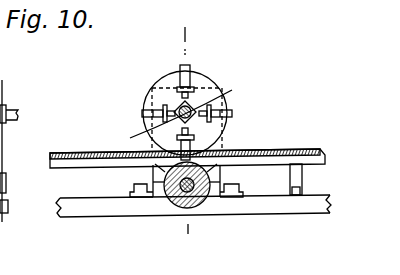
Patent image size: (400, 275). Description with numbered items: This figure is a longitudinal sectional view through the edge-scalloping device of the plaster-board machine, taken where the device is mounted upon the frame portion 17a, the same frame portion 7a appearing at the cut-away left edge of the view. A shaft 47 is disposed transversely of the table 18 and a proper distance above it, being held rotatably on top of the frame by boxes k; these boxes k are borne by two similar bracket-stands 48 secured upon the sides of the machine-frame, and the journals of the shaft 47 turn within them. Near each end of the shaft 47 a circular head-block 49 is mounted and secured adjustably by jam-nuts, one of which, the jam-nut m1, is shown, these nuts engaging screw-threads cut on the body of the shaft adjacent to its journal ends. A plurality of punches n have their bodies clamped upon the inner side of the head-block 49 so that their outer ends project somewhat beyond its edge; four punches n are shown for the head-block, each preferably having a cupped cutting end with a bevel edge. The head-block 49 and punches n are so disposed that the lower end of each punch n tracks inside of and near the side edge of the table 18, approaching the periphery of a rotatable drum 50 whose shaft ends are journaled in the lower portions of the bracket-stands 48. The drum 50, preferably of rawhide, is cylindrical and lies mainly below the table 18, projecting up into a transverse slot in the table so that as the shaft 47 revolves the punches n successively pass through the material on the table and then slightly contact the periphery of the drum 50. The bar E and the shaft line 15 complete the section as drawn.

The shaft 15 is at (195, 137).
The frame portion 17a is at (313, 206).
The table 18 is at (128, 163).
The shaft 47 is at (190, 111).
The bracket-stands 48 is at (212, 180).
The head-block 49 is at (167, 80).
The rotatable drum 50 is at (178, 208).
The bed bar E is at (307, 150).
The punches n is at (191, 70).
The jam-nut m1 is at (120, 135).
The boxes k is at (6, 103).
The frame portion 7a is at (7, 237).